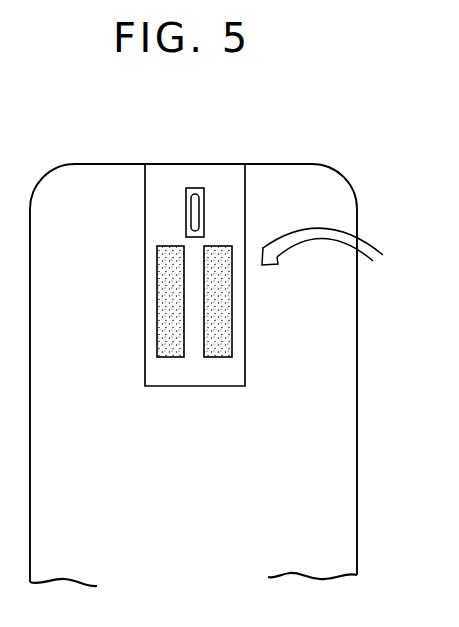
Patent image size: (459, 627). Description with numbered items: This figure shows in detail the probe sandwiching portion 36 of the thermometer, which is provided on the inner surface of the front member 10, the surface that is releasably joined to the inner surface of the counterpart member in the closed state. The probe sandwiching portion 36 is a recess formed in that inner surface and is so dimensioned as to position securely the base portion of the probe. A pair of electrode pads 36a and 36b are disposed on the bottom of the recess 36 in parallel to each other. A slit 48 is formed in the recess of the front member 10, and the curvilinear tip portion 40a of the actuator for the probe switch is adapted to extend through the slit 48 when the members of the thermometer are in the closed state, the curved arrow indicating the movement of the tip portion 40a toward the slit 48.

The front member 10 is at (343, 497).
The probe sandwiching portion 36 is at (165, 184).
The slit 48 is at (203, 188).
The electrode pad 36b is at (168, 352).
The electrode pad 36a is at (218, 347).
The curvilinear tip portion 40a is at (200, 213).